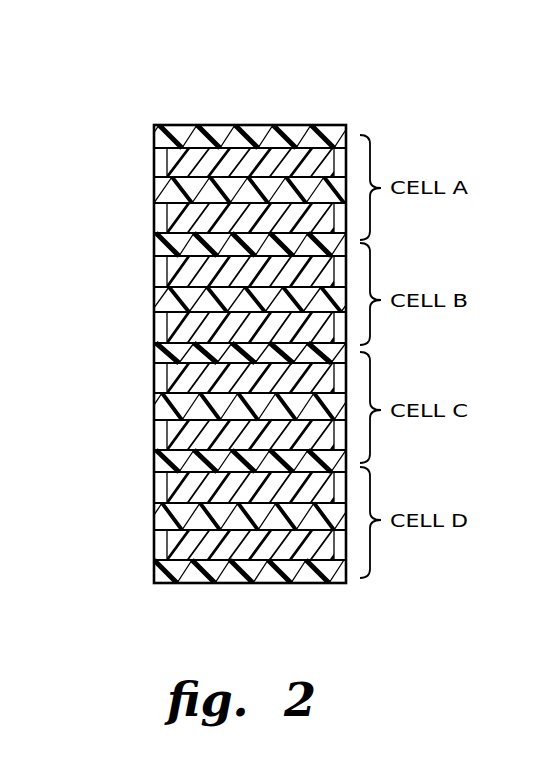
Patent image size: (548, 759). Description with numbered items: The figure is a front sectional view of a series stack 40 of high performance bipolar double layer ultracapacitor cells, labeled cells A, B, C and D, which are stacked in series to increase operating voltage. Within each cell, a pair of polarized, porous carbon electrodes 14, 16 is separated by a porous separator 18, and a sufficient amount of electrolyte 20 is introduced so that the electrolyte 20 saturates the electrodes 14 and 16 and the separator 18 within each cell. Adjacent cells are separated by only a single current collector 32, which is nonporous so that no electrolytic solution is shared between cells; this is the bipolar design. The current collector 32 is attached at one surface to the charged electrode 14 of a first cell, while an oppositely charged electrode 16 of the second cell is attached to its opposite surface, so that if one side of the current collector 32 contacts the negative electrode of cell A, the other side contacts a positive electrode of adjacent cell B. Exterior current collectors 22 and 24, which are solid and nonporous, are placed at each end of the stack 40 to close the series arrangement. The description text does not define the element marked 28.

The series stack 40 is at (140, 113).
The porous electrode 14 is at (224, 152).
The exterior current collector 22 is at (297, 137).
The first structural layer 28 is at (341, 164).
The porous separator 18 is at (157, 190).
The porous electrode 16 is at (163, 212).
The current collector 32 is at (162, 242).
The electrolyte 20 is at (341, 387).
The exterior current collector 24 is at (228, 556).